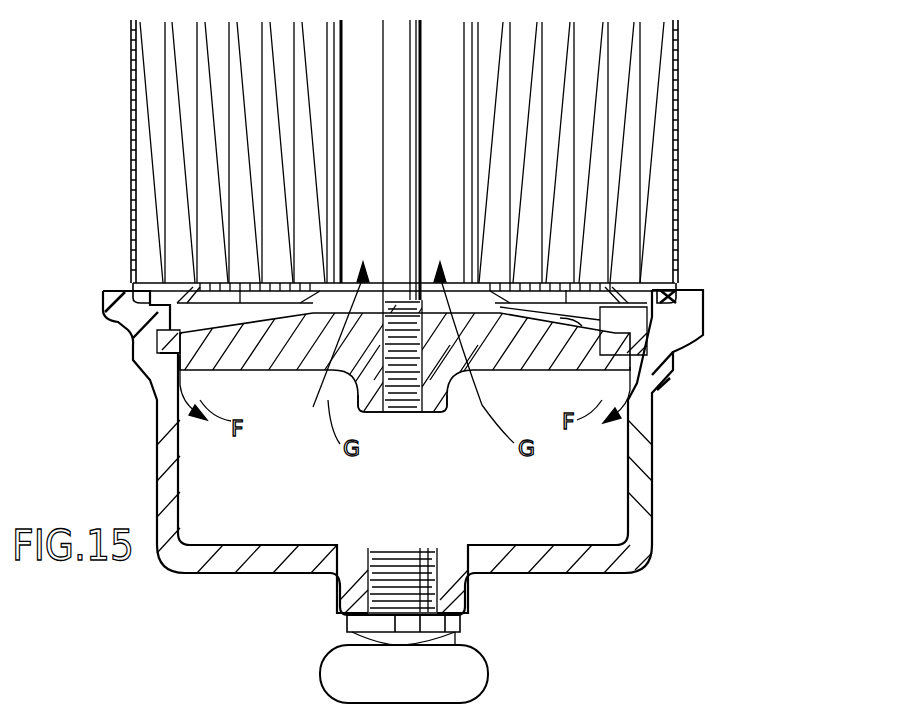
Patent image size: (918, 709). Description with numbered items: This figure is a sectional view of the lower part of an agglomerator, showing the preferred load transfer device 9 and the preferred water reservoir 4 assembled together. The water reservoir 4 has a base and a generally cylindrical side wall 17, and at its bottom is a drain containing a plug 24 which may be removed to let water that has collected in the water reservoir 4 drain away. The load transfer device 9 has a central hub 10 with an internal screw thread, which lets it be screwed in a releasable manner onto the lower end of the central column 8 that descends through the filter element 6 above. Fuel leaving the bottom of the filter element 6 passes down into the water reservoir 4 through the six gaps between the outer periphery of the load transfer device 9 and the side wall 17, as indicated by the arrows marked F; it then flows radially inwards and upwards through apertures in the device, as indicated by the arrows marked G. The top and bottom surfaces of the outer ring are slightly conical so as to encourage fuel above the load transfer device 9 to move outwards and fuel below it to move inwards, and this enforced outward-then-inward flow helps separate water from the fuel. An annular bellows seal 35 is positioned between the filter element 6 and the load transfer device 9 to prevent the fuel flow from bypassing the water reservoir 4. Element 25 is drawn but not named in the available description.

The water reservoir 4 is at (651, 460).
The filter element 6 is at (676, 100).
The central column 8 is at (414, 115).
The load transfer device 9 is at (584, 325).
The central hub 10 is at (455, 395).
The side wall 17 is at (650, 527).
The plug 24 is at (474, 673).
The retaining clip 25 is at (670, 283).
The annular bellows seal 35 is at (313, 318).